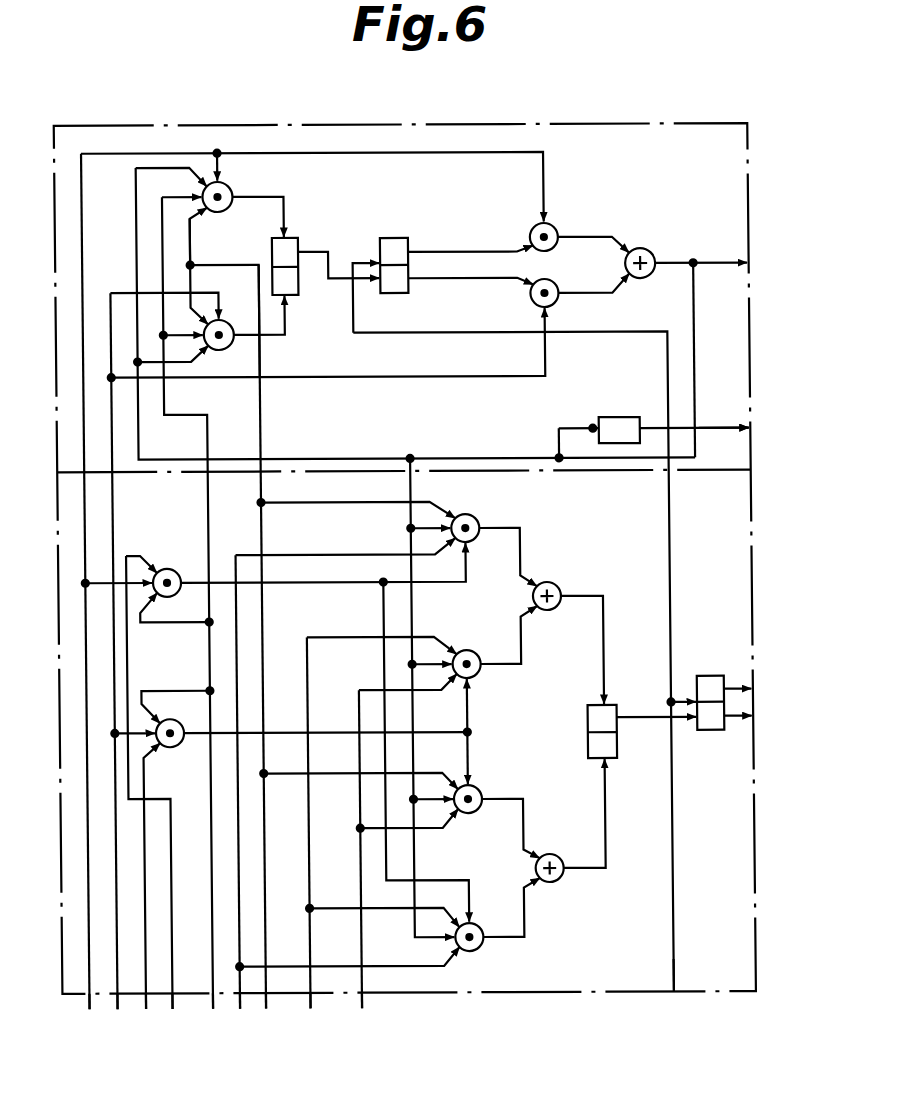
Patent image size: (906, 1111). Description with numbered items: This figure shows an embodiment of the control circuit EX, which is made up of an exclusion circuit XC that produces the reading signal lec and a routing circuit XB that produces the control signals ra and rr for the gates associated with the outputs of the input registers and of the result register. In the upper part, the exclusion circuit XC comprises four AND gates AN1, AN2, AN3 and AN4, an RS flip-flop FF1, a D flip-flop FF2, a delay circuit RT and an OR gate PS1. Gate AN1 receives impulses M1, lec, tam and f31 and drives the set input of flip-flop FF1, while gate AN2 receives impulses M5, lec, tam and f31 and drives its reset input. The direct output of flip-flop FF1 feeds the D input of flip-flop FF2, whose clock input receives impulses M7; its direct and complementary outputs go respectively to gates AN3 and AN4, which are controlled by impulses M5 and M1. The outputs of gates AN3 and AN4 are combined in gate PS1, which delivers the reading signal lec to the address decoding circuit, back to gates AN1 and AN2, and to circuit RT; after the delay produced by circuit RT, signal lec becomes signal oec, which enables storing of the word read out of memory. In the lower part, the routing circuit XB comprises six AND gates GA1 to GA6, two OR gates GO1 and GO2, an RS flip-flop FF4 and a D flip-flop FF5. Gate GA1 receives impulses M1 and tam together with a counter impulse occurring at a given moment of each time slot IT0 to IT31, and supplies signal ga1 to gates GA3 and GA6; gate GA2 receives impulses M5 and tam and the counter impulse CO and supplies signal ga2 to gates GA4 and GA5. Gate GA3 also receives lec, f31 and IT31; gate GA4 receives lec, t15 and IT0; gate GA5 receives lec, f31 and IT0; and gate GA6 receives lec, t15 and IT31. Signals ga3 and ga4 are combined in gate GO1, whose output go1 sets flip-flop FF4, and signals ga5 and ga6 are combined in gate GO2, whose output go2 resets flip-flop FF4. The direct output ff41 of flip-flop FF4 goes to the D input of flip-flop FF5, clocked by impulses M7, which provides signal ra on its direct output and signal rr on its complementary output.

The control circuit EX is at (455, 124).
The exclusion circuit XC is at (404, 437).
The routing circuit XB is at (404, 496).
The AND gate AN1 is at (219, 212).
The AND gate AN2 is at (219, 350).
The AND gate AN3 is at (557, 303).
The AND gate AN4 is at (557, 227).
The RS flip-flop FF1 is at (297, 238).
The D flip-flop FF2 is at (393, 238).
The RS flip-flop FF4 is at (586, 717).
The D flip-flop FF5 is at (721, 663).
The OR gate PS1 is at (648, 249).
The delay circuit RT is at (628, 404).
The AND gate GA1 is at (187, 557).
The AND gate GA2 is at (168, 746).
The AND gate GA3 is at (475, 518).
The AND gate GA4 is at (469, 650).
The AND gate GA5 is at (475, 789).
The AND gate GA6 is at (475, 948).
The OR gate GO1 is at (551, 583).
The OR gate GO2 is at (548, 883).
The reading signal lec is at (752, 264).
The delayed reading signal oec is at (752, 429).
The gate output signal ga1 is at (278, 582).
The gate output signal ga2 is at (303, 732).
The gate output signal ga3 is at (520, 546).
The gate output signal ga4 is at (490, 666).
The gate output signal ga5 is at (492, 800).
The gate output signal ga6 is at (520, 937).
The OR gate output signal go1 is at (602, 630).
The OR gate output signal go2 is at (602, 815).
The flip-flop output signal ff41 is at (656, 718).
The control signal rr is at (752, 690).
The control signal ra is at (752, 717).
The timing impulse M1 is at (85, 1008).
The timing impulse M5 is at (113, 1008).
The counter impulse CO is at (142, 1008).
The timing impulse tam is at (208, 1008).
The time slot impulse IT31 is at (236, 1008).
The timing impulse f31 is at (262, 1008).
The time slot impulse t15 is at (306, 1008).
The time slot impulse IT0 is at (358, 1008).
The clock impulse M7 is at (670, 992).